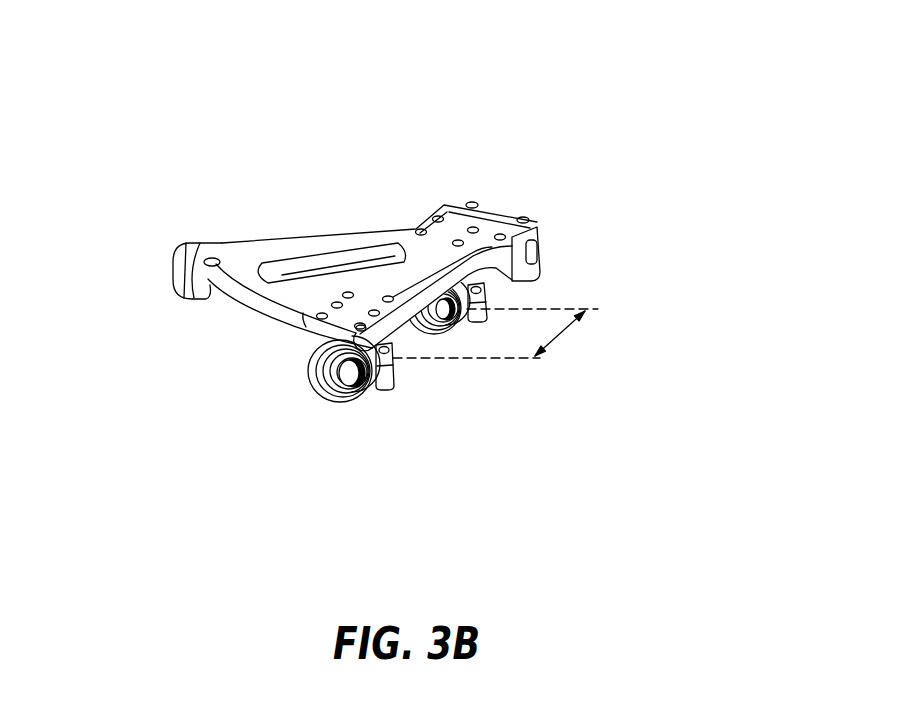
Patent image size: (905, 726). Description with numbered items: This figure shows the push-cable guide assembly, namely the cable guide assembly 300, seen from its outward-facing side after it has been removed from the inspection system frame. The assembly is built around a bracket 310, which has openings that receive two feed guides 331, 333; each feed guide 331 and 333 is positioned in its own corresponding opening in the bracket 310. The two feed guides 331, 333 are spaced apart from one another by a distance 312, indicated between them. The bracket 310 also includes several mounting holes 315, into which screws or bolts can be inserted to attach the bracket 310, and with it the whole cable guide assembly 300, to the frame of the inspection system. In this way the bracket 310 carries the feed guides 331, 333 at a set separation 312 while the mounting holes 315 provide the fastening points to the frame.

The cable guide assembly 300 is at (431, 245).
The bracket 310 is at (329, 241).
The distance 312 is at (566, 333).
The mounting holes 315 is at (198, 243).
The feed guide 331 is at (395, 243).
The feed guide 333 is at (345, 398).